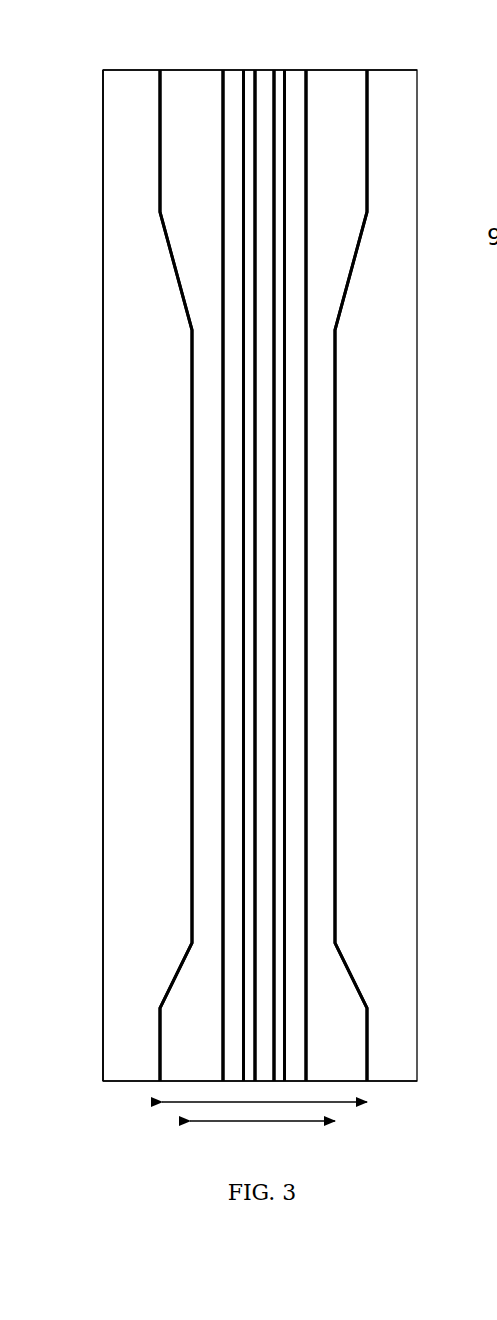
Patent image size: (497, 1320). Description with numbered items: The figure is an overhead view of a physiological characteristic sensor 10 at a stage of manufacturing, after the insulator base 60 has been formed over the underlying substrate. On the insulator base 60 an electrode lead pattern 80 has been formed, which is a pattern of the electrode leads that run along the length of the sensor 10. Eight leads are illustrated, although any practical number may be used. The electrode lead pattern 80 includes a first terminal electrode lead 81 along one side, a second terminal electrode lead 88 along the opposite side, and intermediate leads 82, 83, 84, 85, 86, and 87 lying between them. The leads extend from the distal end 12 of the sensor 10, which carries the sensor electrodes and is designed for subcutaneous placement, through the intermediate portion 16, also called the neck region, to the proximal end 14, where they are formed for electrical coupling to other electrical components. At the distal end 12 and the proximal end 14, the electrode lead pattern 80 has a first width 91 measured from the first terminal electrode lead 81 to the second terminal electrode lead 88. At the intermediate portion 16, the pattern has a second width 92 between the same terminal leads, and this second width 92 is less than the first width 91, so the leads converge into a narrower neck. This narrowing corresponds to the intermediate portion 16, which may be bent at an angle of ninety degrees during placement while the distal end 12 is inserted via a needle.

The sensor 10 is at (90, 746).
The distal end 12 is at (98, 123).
The proximal end 14 is at (98, 1098).
The intermediate portion 16 is at (97, 477).
The insulator base 60 is at (132, 334).
The electrode lead pattern 80 is at (115, 52).
The first terminal electrode lead 81 is at (160, 103).
The intermediate lead 82 is at (222, 118).
The intermediate lead 83 is at (243, 97).
The intermediate lead 84 is at (256, 87).
The intermediate lead 85 is at (285, 87).
The intermediate lead 86 is at (305, 85).
The intermediate lead 87 is at (286, 92).
The second terminal electrode lead 88 is at (367, 98).
The first width 91 is at (340, 1102).
The second width 92 is at (302, 1121).